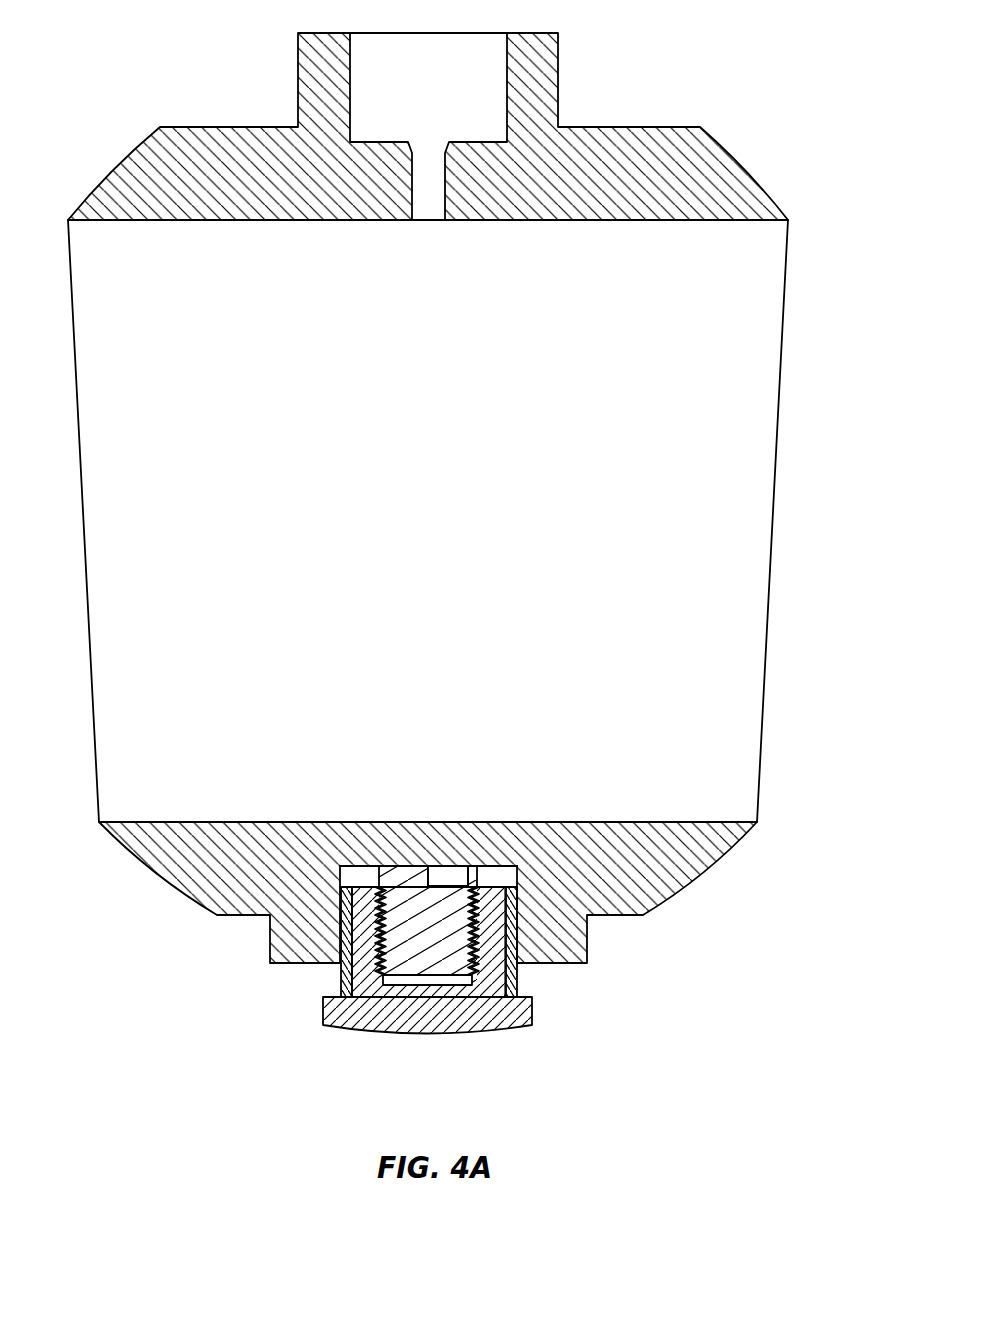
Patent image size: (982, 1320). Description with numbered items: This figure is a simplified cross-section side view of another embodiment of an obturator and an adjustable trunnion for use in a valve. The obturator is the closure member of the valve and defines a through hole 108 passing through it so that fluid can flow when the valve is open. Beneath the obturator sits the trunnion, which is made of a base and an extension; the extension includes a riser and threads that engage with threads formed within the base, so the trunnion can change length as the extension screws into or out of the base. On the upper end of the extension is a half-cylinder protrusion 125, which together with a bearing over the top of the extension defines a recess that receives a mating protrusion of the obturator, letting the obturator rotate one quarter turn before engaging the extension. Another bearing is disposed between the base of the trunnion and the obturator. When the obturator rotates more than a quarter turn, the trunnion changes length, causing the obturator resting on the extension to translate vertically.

The through hole 108 is at (732, 626).
The half-cylinder protrusion 125 is at (407, 870).